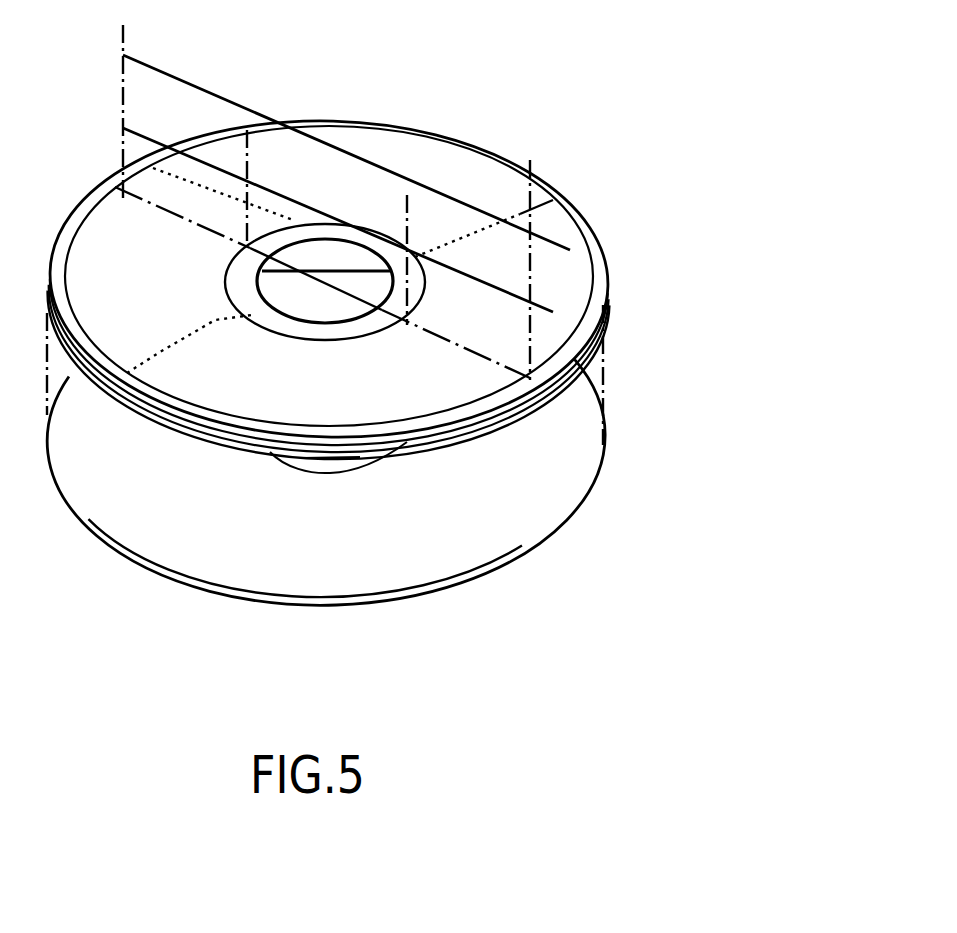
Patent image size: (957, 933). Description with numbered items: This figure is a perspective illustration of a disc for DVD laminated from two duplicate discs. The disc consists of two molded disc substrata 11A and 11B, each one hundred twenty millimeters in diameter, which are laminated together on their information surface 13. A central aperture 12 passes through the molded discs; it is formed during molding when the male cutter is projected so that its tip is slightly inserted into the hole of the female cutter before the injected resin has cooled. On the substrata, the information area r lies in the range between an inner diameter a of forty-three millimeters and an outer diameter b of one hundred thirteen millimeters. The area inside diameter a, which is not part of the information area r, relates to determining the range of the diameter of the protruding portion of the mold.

The molded disc substratum 11A is at (593, 237).
The molded disc substratum 11B is at (600, 437).
The central aperture 12 is at (352, 246).
The information surface 13 is at (527, 513).
The inner diameter of information area a is at (297, 197).
The outer diameter of information area b is at (437, 187).
The information area r is at (200, 157).